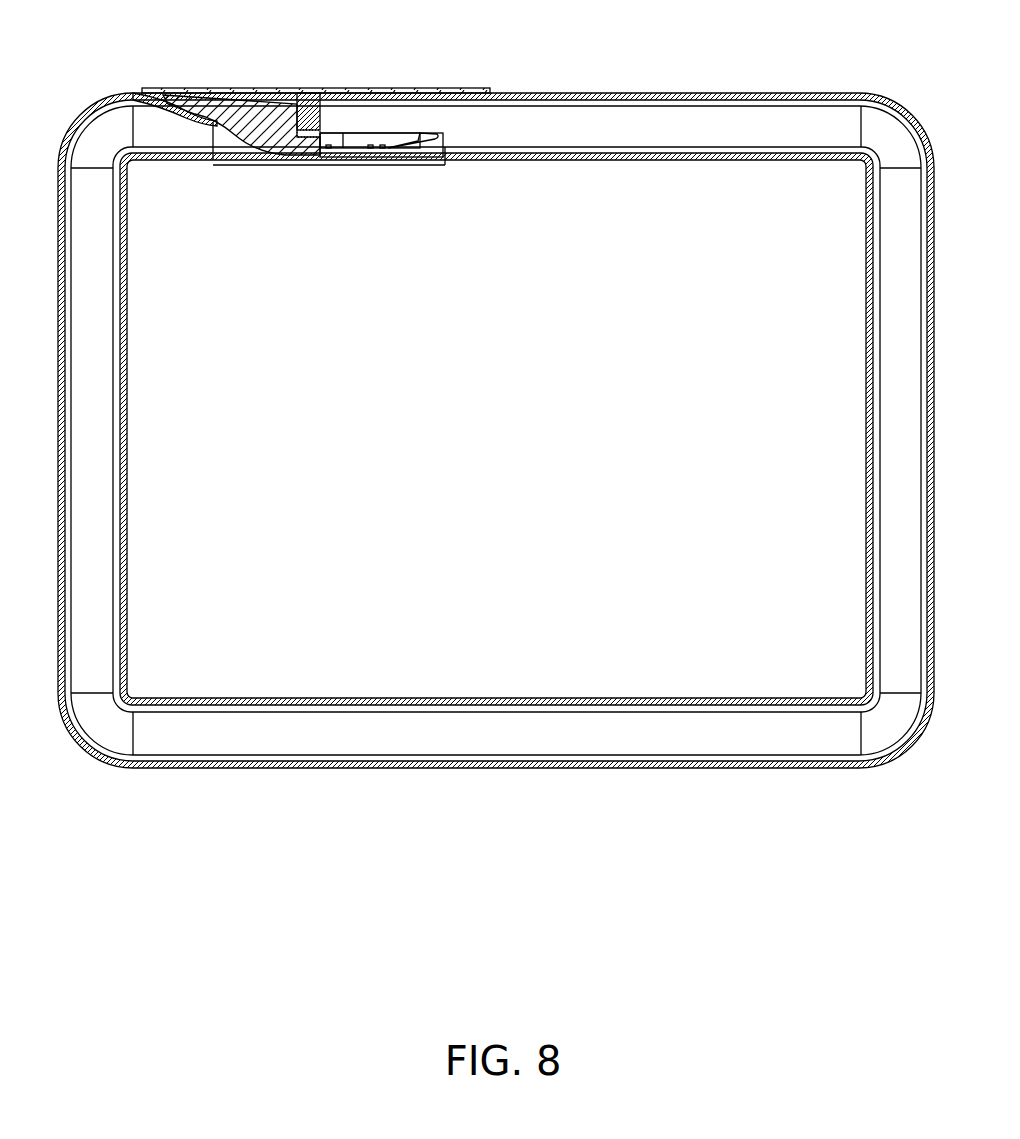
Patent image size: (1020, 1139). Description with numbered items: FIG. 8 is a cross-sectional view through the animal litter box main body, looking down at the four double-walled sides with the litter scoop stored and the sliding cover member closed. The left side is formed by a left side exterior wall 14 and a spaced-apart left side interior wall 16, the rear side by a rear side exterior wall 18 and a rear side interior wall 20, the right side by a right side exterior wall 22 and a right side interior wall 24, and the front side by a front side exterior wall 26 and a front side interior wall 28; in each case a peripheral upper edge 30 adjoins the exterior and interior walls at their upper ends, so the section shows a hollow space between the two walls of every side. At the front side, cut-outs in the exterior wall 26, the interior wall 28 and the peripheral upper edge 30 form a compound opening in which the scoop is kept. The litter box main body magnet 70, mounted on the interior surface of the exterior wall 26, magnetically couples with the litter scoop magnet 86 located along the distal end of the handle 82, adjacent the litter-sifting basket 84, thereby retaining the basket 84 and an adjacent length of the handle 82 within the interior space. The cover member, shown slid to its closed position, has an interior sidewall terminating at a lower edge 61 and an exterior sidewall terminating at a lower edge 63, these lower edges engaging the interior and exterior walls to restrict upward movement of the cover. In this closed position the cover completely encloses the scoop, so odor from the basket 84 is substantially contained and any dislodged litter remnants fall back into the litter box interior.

The left side exterior wall 14 is at (58, 372).
The left side interior wall 16 is at (125, 413).
The rear side exterior wall 18 is at (668, 768).
The rear side interior wall 20 is at (640, 698).
The right side exterior wall 22 is at (930, 582).
The right side interior wall 24 is at (868, 525).
The front side exterior wall 26 is at (593, 93).
The front side interior wall 28 is at (673, 162).
The peripheral upper edge 30 is at (714, 143).
The lower edge of interior sidewall 61 is at (398, 168).
The lower edge of exterior sidewall 63 is at (470, 88).
The litter box main body magnet 70 is at (308, 92).
The handle 82 is at (235, 88).
The litter-sifting basket 84 is at (397, 133).
The litter scoop magnet 86 is at (322, 130).